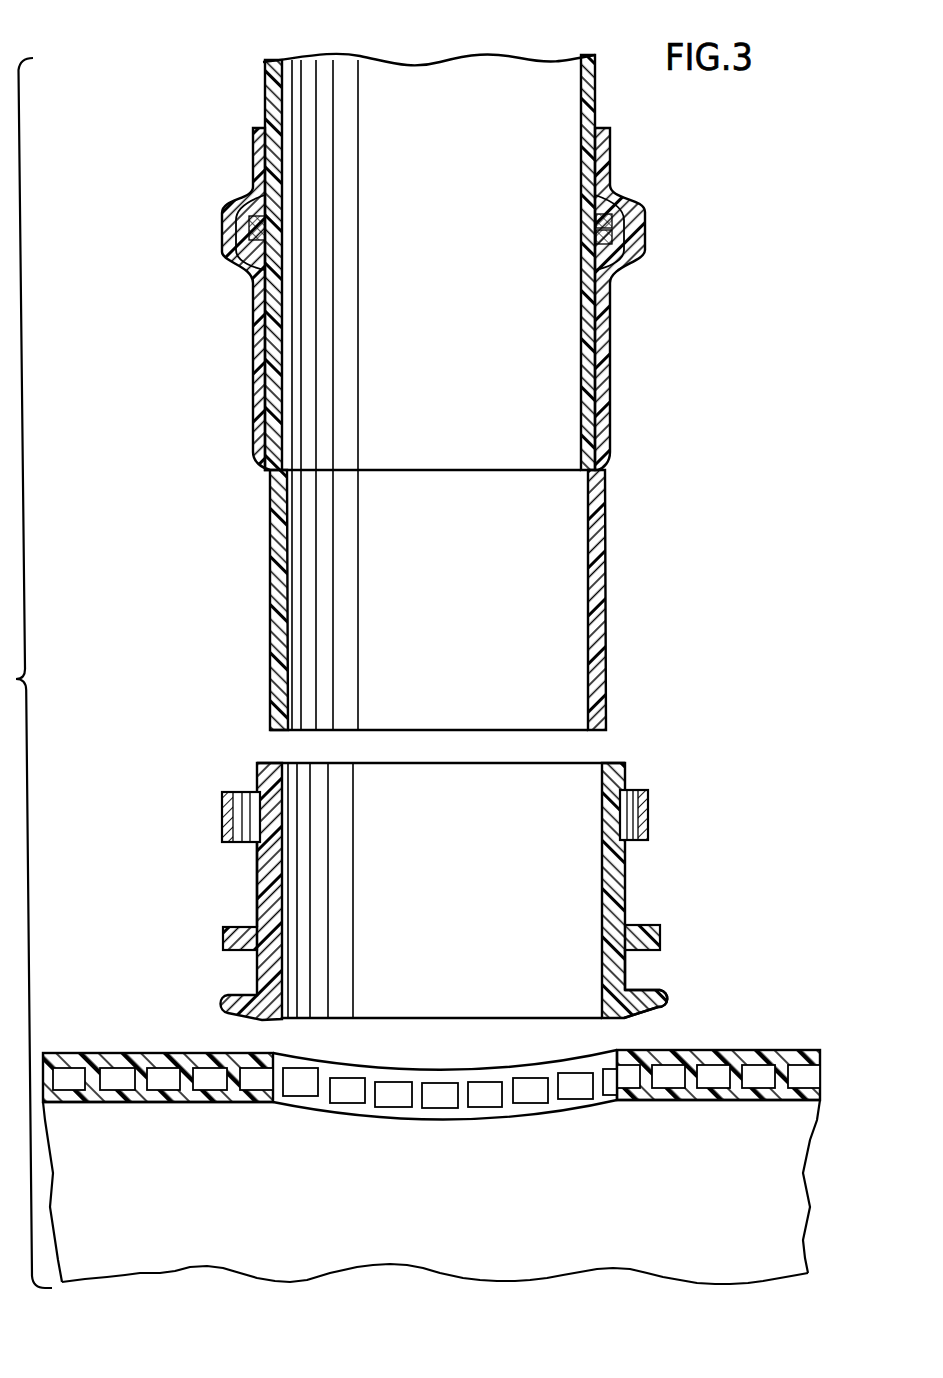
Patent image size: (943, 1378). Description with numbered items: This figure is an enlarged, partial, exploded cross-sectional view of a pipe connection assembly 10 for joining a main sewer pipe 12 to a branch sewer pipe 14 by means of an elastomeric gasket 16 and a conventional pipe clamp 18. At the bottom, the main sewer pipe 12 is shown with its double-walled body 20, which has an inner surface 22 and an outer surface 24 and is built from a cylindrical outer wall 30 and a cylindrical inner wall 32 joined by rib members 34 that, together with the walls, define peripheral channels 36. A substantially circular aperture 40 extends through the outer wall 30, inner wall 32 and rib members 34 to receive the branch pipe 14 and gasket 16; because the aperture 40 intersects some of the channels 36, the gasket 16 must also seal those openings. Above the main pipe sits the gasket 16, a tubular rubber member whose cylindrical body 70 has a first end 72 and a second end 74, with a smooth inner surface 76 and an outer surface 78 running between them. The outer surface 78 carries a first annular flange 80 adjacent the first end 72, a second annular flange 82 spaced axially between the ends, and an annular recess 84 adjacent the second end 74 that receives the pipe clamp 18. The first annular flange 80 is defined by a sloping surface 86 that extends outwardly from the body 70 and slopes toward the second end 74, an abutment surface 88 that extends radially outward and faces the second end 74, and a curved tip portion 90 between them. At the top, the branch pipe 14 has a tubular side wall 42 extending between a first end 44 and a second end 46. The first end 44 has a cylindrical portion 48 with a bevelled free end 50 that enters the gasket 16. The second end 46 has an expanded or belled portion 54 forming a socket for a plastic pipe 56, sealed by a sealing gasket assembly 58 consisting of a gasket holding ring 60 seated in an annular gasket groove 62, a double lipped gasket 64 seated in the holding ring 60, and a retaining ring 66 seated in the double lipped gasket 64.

The pipe connection assembly 10 is at (165, 560).
The main sewer pipe 12 is at (431, 1144).
The branch sewer pipe 14 is at (417, 395).
The elastomeric gasket 16 is at (450, 899).
The pipe clamp 18 is at (222, 812).
The double-walled body 20 is at (720, 1050).
The inner surface 22 is at (641, 1100).
The outer surface 24 is at (651, 1052).
The outer wall 30 is at (150, 1053).
The inner wall 32 is at (152, 1103).
The rib member 34 is at (245, 1082).
The peripheral channel 36 is at (122, 1078).
The aperture 40 is at (600, 1120).
The tubular side wall 42 is at (258, 462).
The first end 44 is at (268, 700).
The second end 46 is at (245, 146).
The cylindrical portion 48 is at (270, 590).
The free end 50 is at (278, 728).
The expanded or belled portion 54 is at (215, 236).
The plastic pipe 56 is at (263, 70).
The sealing gasket assembly 58 is at (262, 232).
The gasket holding ring 60 is at (632, 268).
The annular gasket groove 62 is at (628, 254).
The double lipped gasket 64 is at (583, 222).
The retaining ring 66 is at (590, 246).
The cylindrical body 70 is at (284, 853).
The first end 72 is at (252, 988).
The second end 74 is at (240, 766).
The inner surface 76 is at (284, 911).
The outer surface 78 is at (257, 858).
The first annular flange 80 is at (656, 987).
The second annular flange 82 is at (645, 918).
The annular recess 84 is at (625, 784).
The sloping surface 86 is at (645, 1019).
The abutment surface 88 is at (657, 967).
The curved tip portion 90 is at (669, 999).